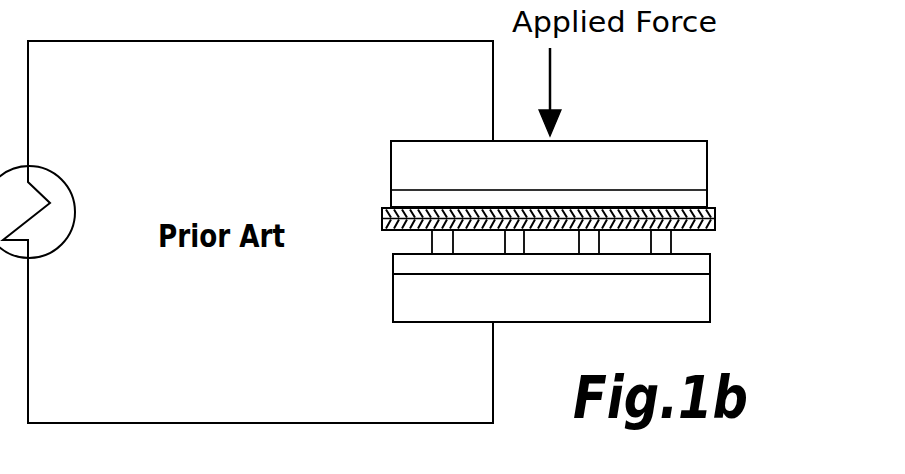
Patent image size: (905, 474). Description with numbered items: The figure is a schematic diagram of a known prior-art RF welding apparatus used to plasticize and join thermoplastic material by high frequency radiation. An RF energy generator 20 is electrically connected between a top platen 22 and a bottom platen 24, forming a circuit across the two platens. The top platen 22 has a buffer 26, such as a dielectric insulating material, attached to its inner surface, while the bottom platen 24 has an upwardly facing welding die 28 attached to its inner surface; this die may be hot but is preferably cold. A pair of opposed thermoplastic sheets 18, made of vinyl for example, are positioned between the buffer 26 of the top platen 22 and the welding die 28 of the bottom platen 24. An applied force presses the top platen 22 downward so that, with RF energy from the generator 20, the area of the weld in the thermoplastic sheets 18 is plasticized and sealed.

The thermoplastic sheets 18 is at (595, 222).
The RF energy generator 20 is at (100, 320).
The top platen 22 is at (673, 158).
The bottom platen 24 is at (685, 306).
The buffer 26 is at (695, 197).
The welding die 28 is at (667, 265).